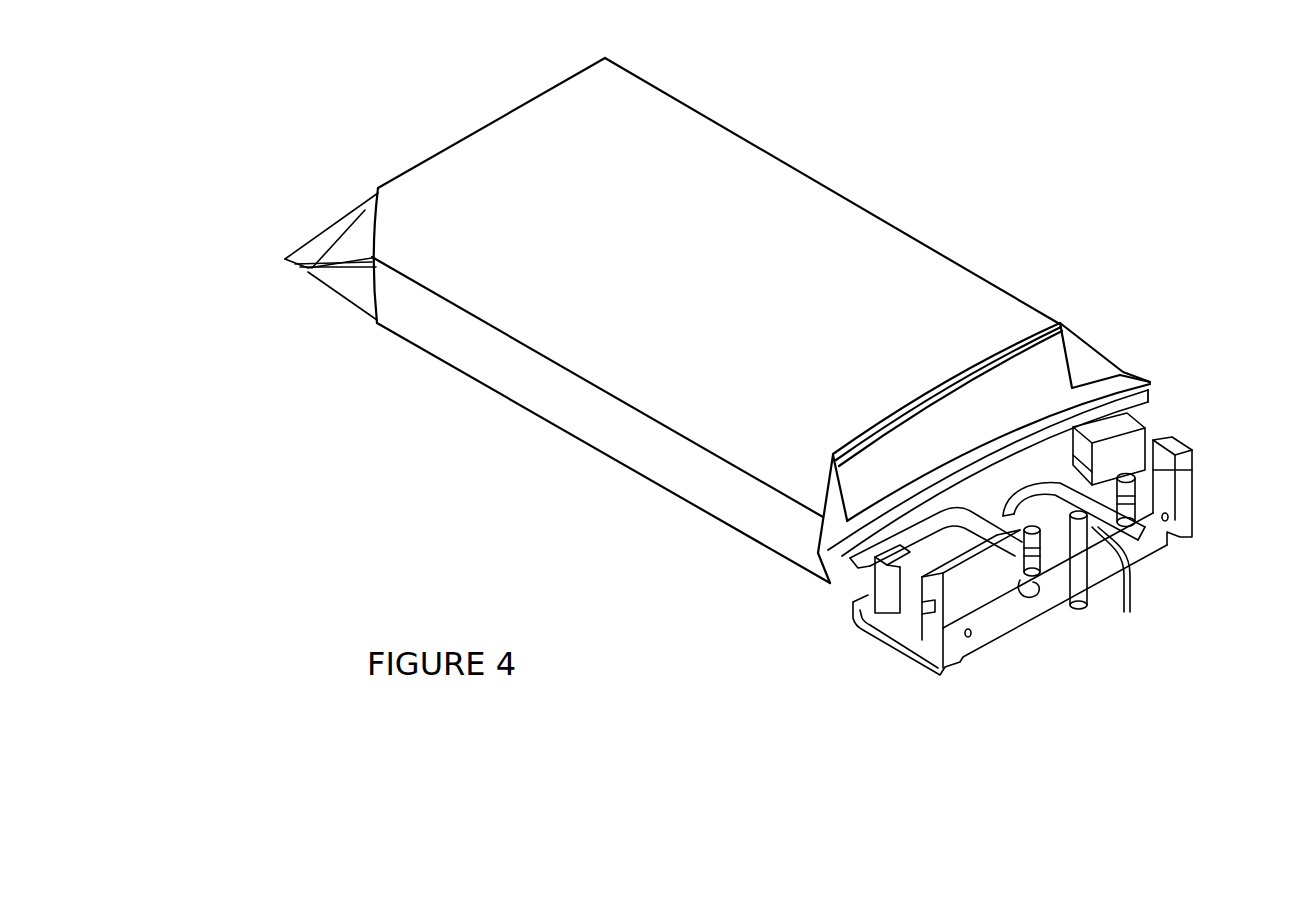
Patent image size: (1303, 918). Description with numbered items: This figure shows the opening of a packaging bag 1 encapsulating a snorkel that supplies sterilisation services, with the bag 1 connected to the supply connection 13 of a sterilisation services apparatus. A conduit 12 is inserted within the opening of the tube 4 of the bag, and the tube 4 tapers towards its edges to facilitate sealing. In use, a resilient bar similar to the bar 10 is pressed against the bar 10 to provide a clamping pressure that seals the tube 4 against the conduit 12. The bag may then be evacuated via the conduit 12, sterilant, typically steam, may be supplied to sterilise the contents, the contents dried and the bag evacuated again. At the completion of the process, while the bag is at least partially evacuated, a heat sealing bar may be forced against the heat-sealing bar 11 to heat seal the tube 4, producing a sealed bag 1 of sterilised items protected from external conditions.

The bag 1 is at (823, 212).
The tube 4 is at (1048, 470).
The bar 10 is at (1175, 450).
The heat-sealing bar 11 is at (1125, 422).
The conduit 12 is at (1097, 563).
The supply connection 13 is at (967, 665).